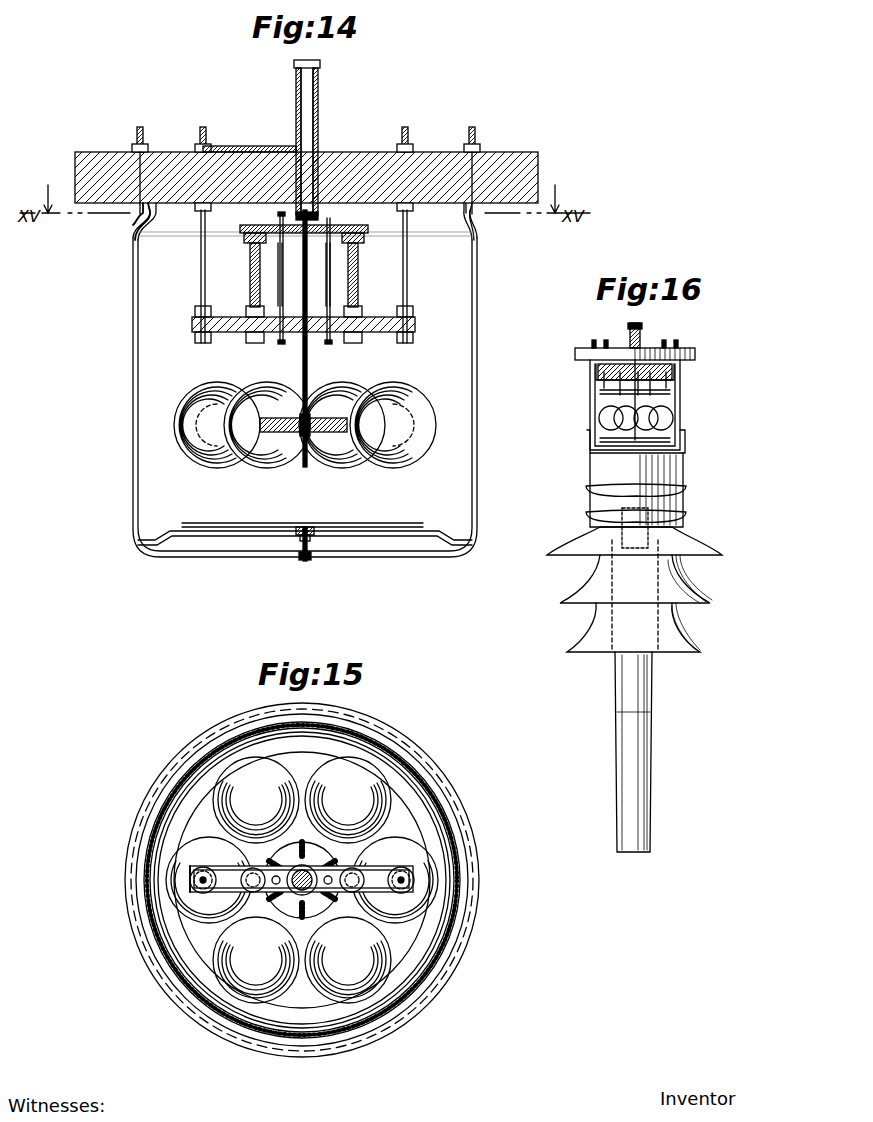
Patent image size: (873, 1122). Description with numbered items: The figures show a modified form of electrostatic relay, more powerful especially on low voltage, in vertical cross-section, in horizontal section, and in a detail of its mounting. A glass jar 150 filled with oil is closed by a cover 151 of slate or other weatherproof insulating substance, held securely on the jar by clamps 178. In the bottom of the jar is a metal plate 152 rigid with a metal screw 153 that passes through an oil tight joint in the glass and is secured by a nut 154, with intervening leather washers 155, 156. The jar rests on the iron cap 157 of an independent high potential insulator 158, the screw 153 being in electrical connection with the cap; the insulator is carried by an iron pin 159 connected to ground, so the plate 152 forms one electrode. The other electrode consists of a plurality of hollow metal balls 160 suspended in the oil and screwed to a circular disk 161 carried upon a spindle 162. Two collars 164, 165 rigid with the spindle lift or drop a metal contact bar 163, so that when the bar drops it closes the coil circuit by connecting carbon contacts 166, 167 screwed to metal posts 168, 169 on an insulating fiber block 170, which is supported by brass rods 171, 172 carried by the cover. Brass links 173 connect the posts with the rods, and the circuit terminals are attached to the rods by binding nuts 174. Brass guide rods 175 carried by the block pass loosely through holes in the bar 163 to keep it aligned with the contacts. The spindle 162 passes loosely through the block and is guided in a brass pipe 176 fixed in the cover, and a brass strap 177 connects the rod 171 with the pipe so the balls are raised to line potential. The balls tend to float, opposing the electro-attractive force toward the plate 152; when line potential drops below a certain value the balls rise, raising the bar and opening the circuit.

In FIG. 14, the glass jar 150 is at (132, 340).
In FIG. 15, the glass jar 150 is at (456, 905).
In FIG. 16, the glass jar 150 is at (680, 402).
In FIG. 14, the cover 151 is at (100, 160).
In FIG. 16, the cover 151 is at (696, 356).
In FIG. 14, the metal plate 152 is at (212, 523).
In FIG. 15, the metal plate 152 is at (400, 822).
In FIG. 14, the metal screw 153 is at (306, 560).
In FIG. 14, the nut 154 is at (300, 555).
In FIG. 14, the leather washer 155 is at (312, 545).
In FIG. 14, the leather washer 156 is at (296, 530).
In FIG. 16, the iron cap 157 is at (684, 505).
In FIG. 16, the high potential insulator 158 is at (684, 576).
In FIG. 16, the iron pin 159 is at (640, 770).
In FIG. 14, the hollow metal balls 160 is at (262, 462).
In FIG. 15, the hollow metal balls 160 is at (334, 975).
In FIG. 14, the circular disk 161 is at (332, 433).
In FIG. 15, the circular disk 161 is at (302, 880).
In FIG. 14, the spindle 162 is at (302, 355).
In FIG. 15, the spindle 162 is at (302, 880).
In FIG. 14, the metal contact bar 163 is at (262, 226).
In FIG. 15, the metal contact bar 163 is at (414, 870).
In FIG. 14, the collar 164 is at (284, 250).
In FIG. 14, the collar 165 is at (330, 221).
In FIG. 14, the carbon contact 166 is at (250, 243).
In FIG. 14, the carbon contact 167 is at (360, 243).
In FIG. 14, the metal post 168 is at (250, 293).
In FIG. 15, the metal post 168 is at (188, 862).
In FIG. 14, the metal post 169 is at (358, 300).
In FIG. 15, the metal post 169 is at (356, 894).
In FIG. 14, the insulating fiber block 170 is at (194, 326).
In FIG. 15, the insulating fiber block 170 is at (190, 884).
In FIG. 14, the brass rod 171 is at (198, 304).
In FIG. 15, the brass rod 171 is at (200, 880).
In FIG. 14, the brass rod 172 is at (408, 302).
In FIG. 15, the brass rod 172 is at (404, 880).
In FIG. 14, the brass links 173 is at (232, 334).
In FIG. 15, the brass links 173 is at (214, 905).
In FIG. 14, the binding nuts 174 is at (203, 145).
In FIG. 16, the binding nuts 174 is at (668, 346).
In FIG. 14, the brass guide rods 175 is at (278, 285).
In FIG. 15, the brass guide rods 175 is at (273, 879).
In FIG. 14, the brass pipe 176 is at (318, 110).
In FIG. 16, the brass pipe 176 is at (642, 338).
In FIG. 14, the brass strap 177 is at (252, 145).
In FIG. 14, the clamps 178 is at (138, 212).